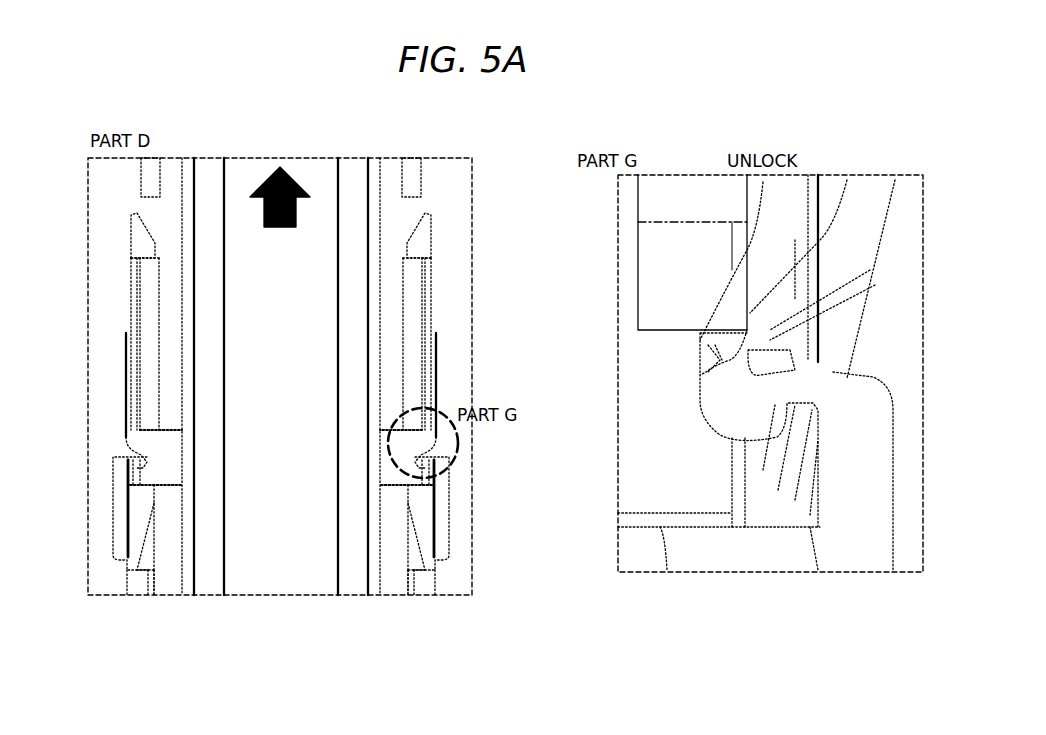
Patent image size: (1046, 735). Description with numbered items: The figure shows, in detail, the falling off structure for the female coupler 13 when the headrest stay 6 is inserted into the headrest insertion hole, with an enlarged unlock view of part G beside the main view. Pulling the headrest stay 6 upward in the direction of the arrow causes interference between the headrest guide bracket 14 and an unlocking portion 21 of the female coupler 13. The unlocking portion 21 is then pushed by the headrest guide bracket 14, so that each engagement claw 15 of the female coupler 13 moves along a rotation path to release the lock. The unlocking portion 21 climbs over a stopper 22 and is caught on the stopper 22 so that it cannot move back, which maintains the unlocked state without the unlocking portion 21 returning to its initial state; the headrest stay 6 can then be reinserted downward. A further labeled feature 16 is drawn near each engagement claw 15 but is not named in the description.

The headrest stay 6 is at (280, 412).
The female coupler 13 is at (279, 461).
The headrest guide bracket 14 is at (281, 426).
The engagement claw 15 is at (279, 235).
The lance receiving portion 16 is at (278, 185).
The unlocking portion 21 is at (831, 288).
The stopper 22 is at (755, 450).